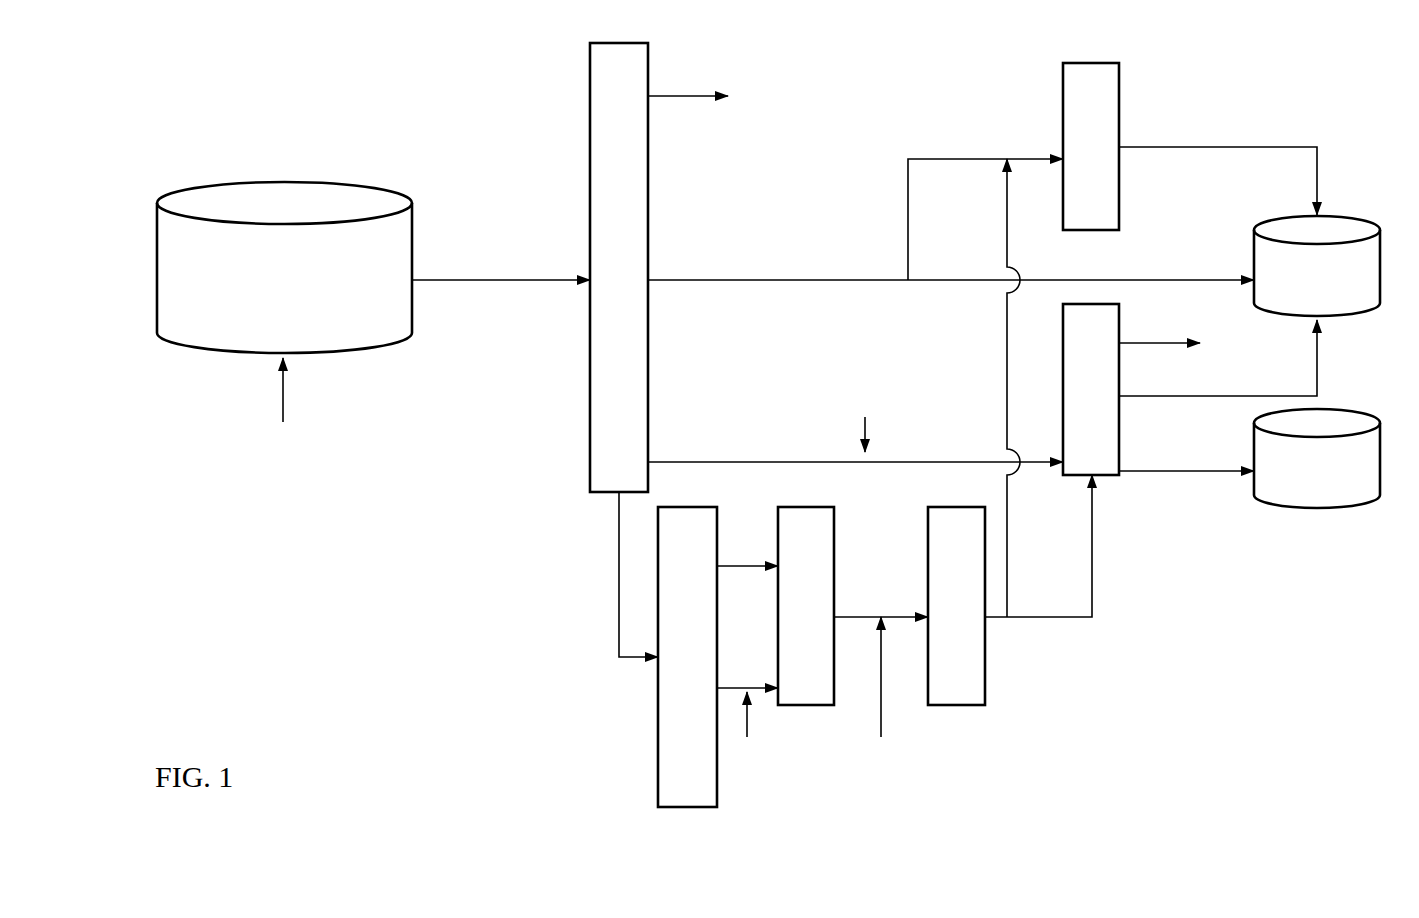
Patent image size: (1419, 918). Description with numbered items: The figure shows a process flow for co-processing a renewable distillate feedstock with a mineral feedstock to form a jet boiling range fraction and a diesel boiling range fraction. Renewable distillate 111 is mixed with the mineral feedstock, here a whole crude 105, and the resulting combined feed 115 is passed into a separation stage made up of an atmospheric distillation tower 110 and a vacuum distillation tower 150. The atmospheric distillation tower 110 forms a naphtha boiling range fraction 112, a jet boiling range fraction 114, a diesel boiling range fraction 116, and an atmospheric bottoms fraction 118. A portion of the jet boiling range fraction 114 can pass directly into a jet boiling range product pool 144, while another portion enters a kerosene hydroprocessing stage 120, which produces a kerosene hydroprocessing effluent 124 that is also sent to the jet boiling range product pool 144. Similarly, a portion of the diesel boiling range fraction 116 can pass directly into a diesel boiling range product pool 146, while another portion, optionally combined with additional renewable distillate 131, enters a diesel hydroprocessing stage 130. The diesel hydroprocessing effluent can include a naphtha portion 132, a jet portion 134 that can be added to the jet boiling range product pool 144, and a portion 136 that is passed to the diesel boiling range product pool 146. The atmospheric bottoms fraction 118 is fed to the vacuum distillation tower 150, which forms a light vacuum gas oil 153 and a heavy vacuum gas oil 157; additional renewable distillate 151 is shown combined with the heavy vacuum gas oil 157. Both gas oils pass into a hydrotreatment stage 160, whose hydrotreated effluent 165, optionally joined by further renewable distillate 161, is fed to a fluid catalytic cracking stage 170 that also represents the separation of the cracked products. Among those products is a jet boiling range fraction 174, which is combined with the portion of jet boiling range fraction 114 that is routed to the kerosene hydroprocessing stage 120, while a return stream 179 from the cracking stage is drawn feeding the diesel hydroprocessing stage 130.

The whole crude 105 is at (284, 267).
The atmospheric distillation tower 110 is at (575, 195).
The renewable distillate 111 is at (275, 430).
The naphtha boiling range fraction 112 is at (713, 74).
The jet boiling range fraction 114 is at (697, 267).
The combined feed 115 is at (515, 292).
The diesel boiling range fraction 116 is at (682, 447).
The atmospheric bottoms fraction 118 is at (605, 622).
The kerosene hydroprocessing stage 120 is at (1049, 87).
The kerosene hydroprocessing effluent 124 is at (1218, 122).
The diesel hydroprocessing stage 130 is at (1112, 485).
The additional renewable distillate 131 is at (859, 407).
The naphtha portion 132 is at (1163, 329).
The jet portion 134 is at (1298, 381).
The portion of diesel hydroprocessing effluent 136 is at (1198, 485).
The jet boiling range product pool 144 is at (1317, 266).
The diesel boiling range product pool 146 is at (1317, 458).
The vacuum distillation tower 150 is at (645, 718).
The additional renewable distillate 151 is at (757, 743).
The light vacuum gas oil 153 is at (753, 552).
The heavy vacuum gas oil 157 is at (753, 677).
The hydrotreatment stage 160 is at (828, 720).
The additional renewable distillate 161 is at (905, 743).
The hydrotreated effluent 165 is at (899, 598).
The fluid catalytic cracking stage 170 is at (998, 698).
The jet boiling range fraction 174 is at (997, 378).
The feedback path to second processing module 179 is at (1102, 588).